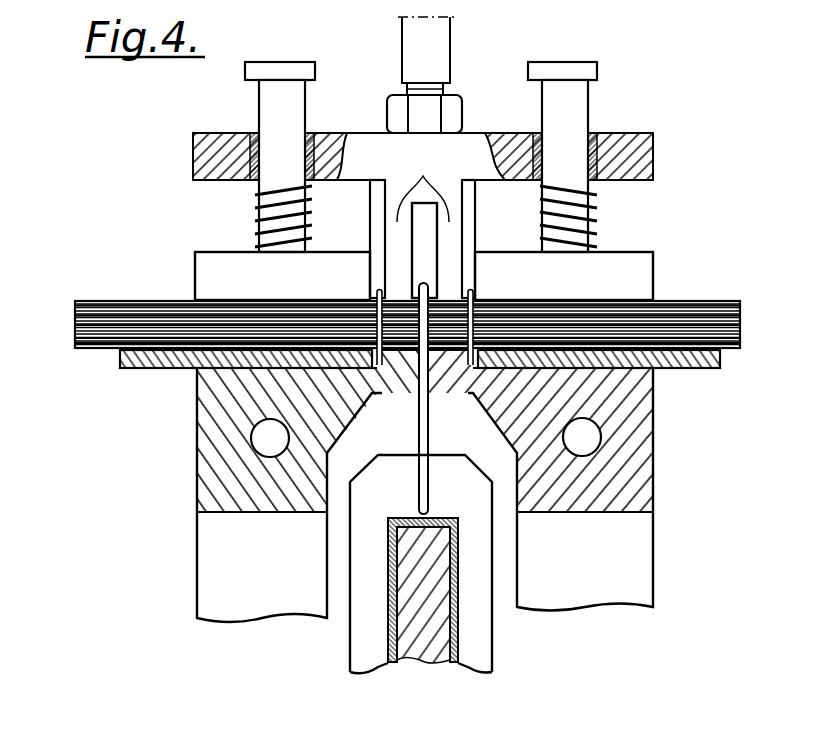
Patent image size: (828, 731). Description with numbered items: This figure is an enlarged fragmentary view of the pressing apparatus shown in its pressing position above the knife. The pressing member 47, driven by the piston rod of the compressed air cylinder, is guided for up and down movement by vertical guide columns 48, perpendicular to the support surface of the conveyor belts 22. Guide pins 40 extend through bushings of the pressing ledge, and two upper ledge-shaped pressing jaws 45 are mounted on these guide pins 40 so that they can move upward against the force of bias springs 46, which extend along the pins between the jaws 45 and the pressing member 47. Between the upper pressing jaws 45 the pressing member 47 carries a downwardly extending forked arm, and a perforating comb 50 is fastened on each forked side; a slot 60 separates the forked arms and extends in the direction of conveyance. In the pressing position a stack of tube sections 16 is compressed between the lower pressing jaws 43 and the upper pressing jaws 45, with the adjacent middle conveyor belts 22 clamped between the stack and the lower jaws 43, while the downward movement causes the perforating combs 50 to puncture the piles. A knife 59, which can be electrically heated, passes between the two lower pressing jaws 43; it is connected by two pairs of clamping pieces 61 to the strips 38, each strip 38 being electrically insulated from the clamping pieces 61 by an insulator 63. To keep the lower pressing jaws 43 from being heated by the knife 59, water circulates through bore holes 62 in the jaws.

The tube sections 16 is at (113, 330).
The conveyor belts 22 is at (162, 357).
The strips 38 is at (422, 640).
The guide pins 40 is at (296, 108).
The lower pressing jaws 43 is at (210, 420).
The upper pressing jaws 45 is at (210, 272).
The bias springs 46 is at (256, 200).
The pressing member 47 is at (618, 138).
The guide columns 48 is at (432, 40).
The perforating comb 50 is at (380, 258).
The knife 59 is at (426, 421).
The slot 60 is at (432, 218).
The clamping pieces 61 is at (365, 637).
The bore holes 62 is at (256, 441).
The insulator 63 is at (458, 588).